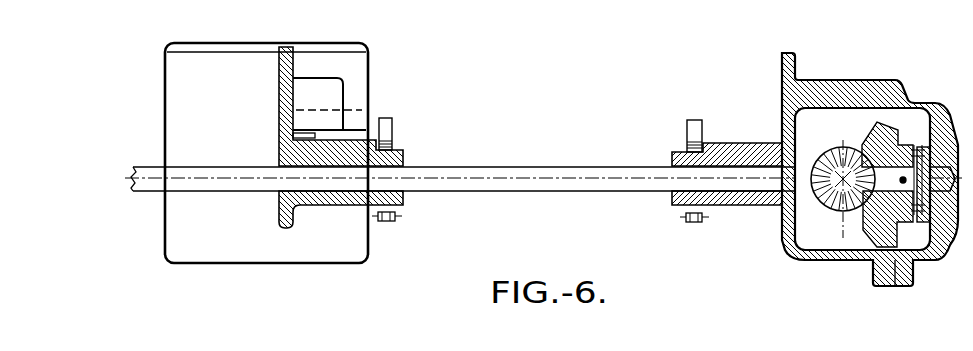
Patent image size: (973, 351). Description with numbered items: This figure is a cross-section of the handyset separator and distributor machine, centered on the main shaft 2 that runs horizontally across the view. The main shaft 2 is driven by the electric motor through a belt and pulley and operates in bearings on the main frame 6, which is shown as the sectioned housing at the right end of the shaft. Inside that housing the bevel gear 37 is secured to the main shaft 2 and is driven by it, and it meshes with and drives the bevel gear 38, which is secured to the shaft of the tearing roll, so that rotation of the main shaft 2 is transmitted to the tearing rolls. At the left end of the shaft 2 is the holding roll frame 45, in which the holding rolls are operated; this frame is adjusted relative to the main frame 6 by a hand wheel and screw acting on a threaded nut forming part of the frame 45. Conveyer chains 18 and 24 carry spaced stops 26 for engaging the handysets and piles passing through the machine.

The main shaft 2 is at (147, 191).
The main frame 6 is at (393, 124).
The conveyer chain 18 is at (690, 148).
The conveyer chain 24 is at (393, 144).
The spaced stops 26 is at (688, 124).
The bevel gear 37 is at (873, 133).
The bevel gear 38 is at (836, 154).
The holding roll frame 45 is at (284, 153).